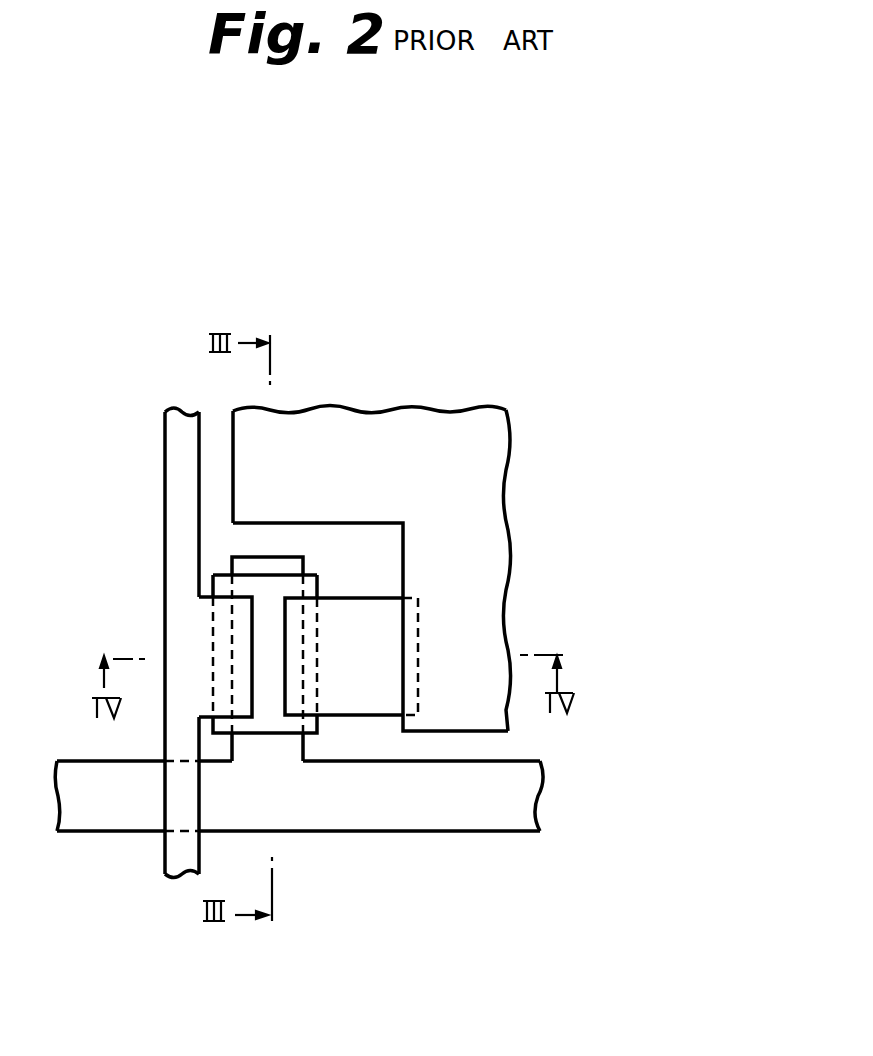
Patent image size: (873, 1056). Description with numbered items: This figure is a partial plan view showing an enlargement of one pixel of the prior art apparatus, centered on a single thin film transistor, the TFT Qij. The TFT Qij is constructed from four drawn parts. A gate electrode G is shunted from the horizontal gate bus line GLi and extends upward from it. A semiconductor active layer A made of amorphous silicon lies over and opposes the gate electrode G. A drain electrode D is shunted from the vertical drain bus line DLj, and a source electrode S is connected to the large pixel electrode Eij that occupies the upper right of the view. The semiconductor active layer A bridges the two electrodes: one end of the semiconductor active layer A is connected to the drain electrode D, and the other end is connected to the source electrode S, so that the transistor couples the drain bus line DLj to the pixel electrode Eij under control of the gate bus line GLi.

The drain bus line DLj is at (162, 492).
The gate bus line GLi is at (103, 820).
The pixel electrode Eij is at (513, 452).
The TFT Qij is at (262, 650).
The gate electrode G is at (295, 553).
The semiconductor active layer A is at (318, 582).
The drain electrode D is at (247, 733).
The source electrode S is at (373, 716).